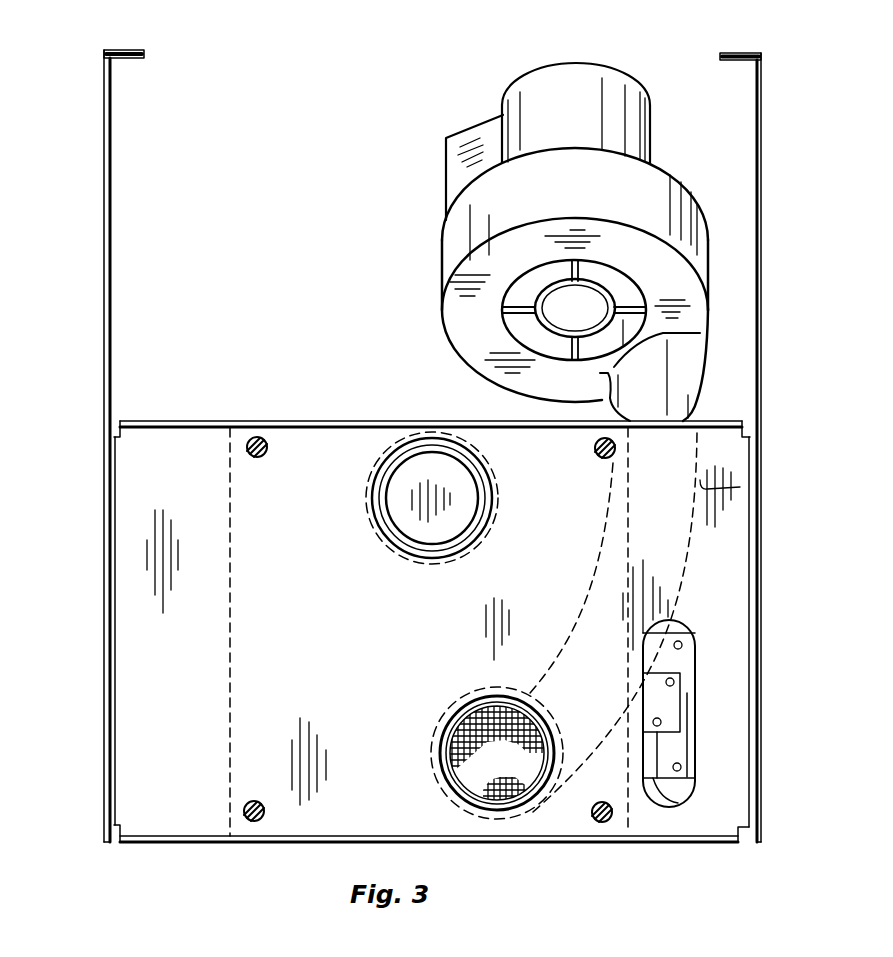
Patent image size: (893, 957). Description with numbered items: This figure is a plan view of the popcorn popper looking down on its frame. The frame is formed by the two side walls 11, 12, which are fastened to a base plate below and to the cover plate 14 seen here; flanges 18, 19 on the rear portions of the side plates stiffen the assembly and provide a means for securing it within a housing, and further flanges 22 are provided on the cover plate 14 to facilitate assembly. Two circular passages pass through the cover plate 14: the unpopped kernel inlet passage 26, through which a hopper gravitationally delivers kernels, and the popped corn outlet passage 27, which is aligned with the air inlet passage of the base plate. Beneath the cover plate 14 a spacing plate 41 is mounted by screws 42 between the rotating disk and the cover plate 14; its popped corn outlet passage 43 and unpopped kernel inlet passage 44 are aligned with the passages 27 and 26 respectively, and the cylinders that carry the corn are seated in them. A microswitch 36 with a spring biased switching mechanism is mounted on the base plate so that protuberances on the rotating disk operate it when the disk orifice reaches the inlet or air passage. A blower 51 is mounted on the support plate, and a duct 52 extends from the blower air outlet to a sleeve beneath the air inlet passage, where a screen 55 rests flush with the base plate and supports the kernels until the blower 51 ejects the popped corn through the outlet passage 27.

The side wall 11 is at (106, 154).
The side wall 12 is at (762, 210).
The cover plate 14 is at (158, 432).
The flange 18 is at (125, 50).
The flange 19 is at (745, 53).
The flange 22 is at (112, 638).
The unpopped kernel inlet passage 26 is at (378, 478).
The popped corn outlet passage 27 is at (505, 807).
The microswitch 36 is at (670, 672).
The spacing plate 41 is at (228, 812).
The screws 42 is at (263, 437).
The popped corn outlet passage 43 is at (430, 746).
The unpopped kernel inlet passage 44 is at (410, 437).
The blower 51 is at (677, 192).
The duct 52 is at (742, 487).
The screen 55 is at (453, 783).